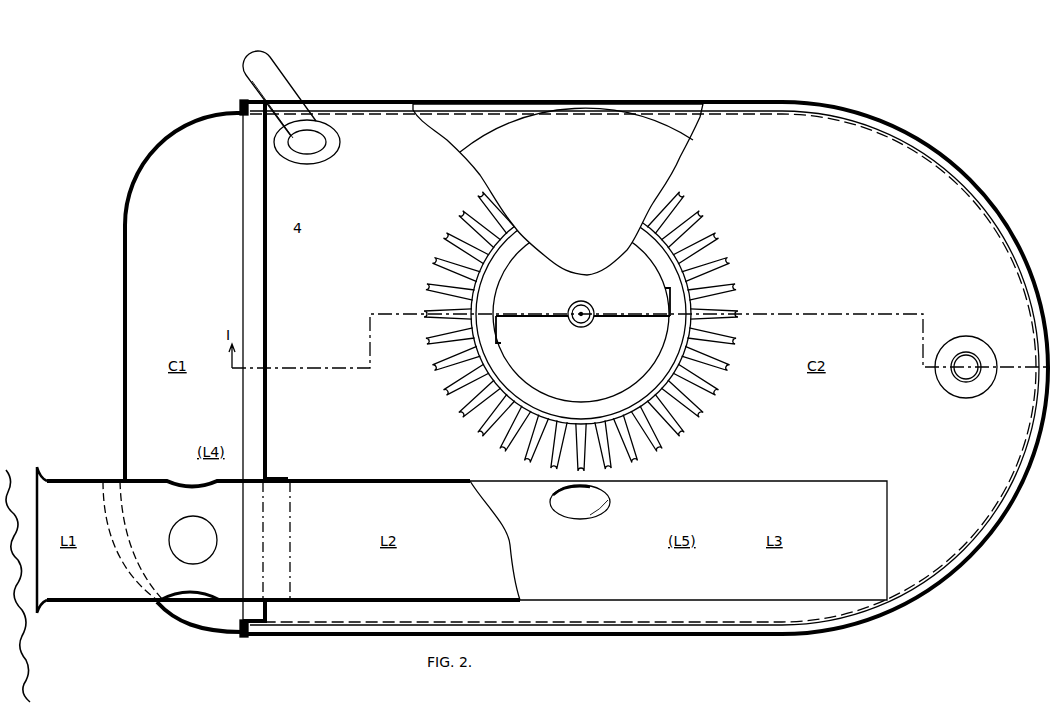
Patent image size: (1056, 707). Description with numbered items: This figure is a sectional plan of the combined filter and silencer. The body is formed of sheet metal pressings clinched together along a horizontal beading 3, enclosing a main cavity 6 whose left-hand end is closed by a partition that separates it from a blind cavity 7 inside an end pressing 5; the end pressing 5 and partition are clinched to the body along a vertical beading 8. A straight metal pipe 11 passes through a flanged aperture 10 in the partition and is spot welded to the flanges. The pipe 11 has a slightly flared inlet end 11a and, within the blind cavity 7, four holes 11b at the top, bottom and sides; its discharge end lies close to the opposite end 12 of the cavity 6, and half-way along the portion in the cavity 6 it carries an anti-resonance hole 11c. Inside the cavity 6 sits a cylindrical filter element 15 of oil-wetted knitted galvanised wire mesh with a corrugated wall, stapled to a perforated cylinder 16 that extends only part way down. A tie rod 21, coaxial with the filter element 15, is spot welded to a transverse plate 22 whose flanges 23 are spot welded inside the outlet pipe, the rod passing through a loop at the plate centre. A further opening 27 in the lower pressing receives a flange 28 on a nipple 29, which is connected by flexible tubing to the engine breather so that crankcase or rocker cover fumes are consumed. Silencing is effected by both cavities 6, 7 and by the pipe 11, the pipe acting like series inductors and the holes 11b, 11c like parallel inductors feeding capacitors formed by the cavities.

The horizontal beading 3 is at (990, 205).
The sheet metal pressing 5 is at (150, 143).
The cavity 6 is at (353, 125).
The blind cavity 7 is at (187, 202).
The vertical beading 8 is at (240, 633).
The flanged aperture 10 is at (285, 478).
The straight metal pipe 11 is at (335, 480).
The flared inlet end 11a is at (70, 455).
The holes 11b is at (193, 516).
The anti-resonance hole 11c is at (610, 503).
The opposite end of the cavity 12 is at (1018, 236).
The filter element 15 is at (720, 238).
The perforated cylinder 16 is at (505, 381).
The tie rod 21 is at (576, 310).
The transverse plate 22 is at (628, 316).
The flanges 23 is at (502, 333).
The opening 27 is at (316, 146).
The flange 28 is at (337, 141).
The nipple 29 is at (276, 83).